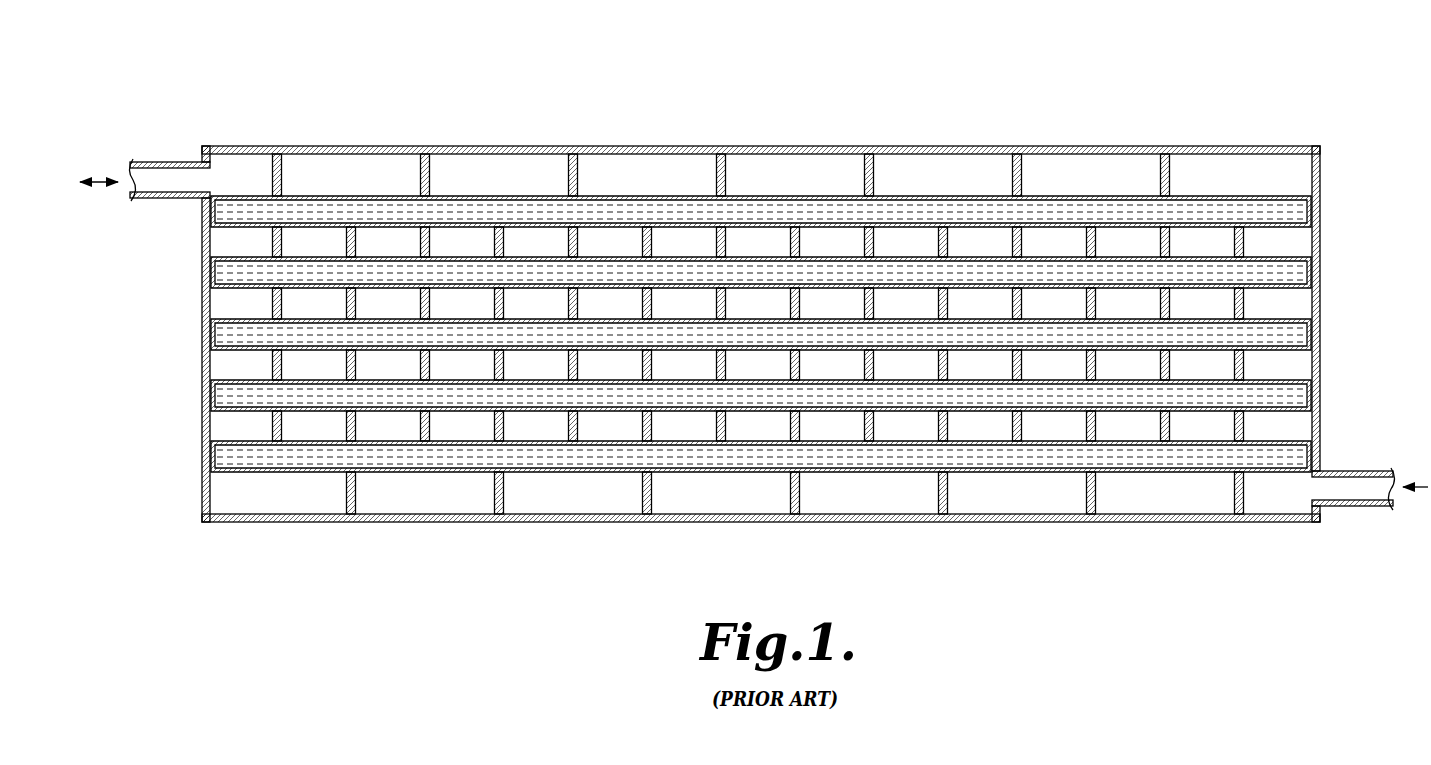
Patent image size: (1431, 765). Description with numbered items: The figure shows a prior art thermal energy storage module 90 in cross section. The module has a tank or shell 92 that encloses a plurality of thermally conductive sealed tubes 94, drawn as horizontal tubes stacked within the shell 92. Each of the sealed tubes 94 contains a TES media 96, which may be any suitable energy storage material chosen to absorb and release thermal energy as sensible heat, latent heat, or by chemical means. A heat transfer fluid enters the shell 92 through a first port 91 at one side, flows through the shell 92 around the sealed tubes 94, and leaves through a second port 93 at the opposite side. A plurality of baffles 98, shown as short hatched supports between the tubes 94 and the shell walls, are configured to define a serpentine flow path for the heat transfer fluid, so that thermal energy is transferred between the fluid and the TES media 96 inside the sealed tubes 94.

The TES module 90 is at (824, 96).
The first port 91 is at (163, 199).
The shell 92 is at (529, 146).
The second port 93 is at (1358, 471).
The sealed tubes 94 is at (1093, 194).
The TES media 96 is at (462, 460).
The baffles 98 is at (1098, 430).